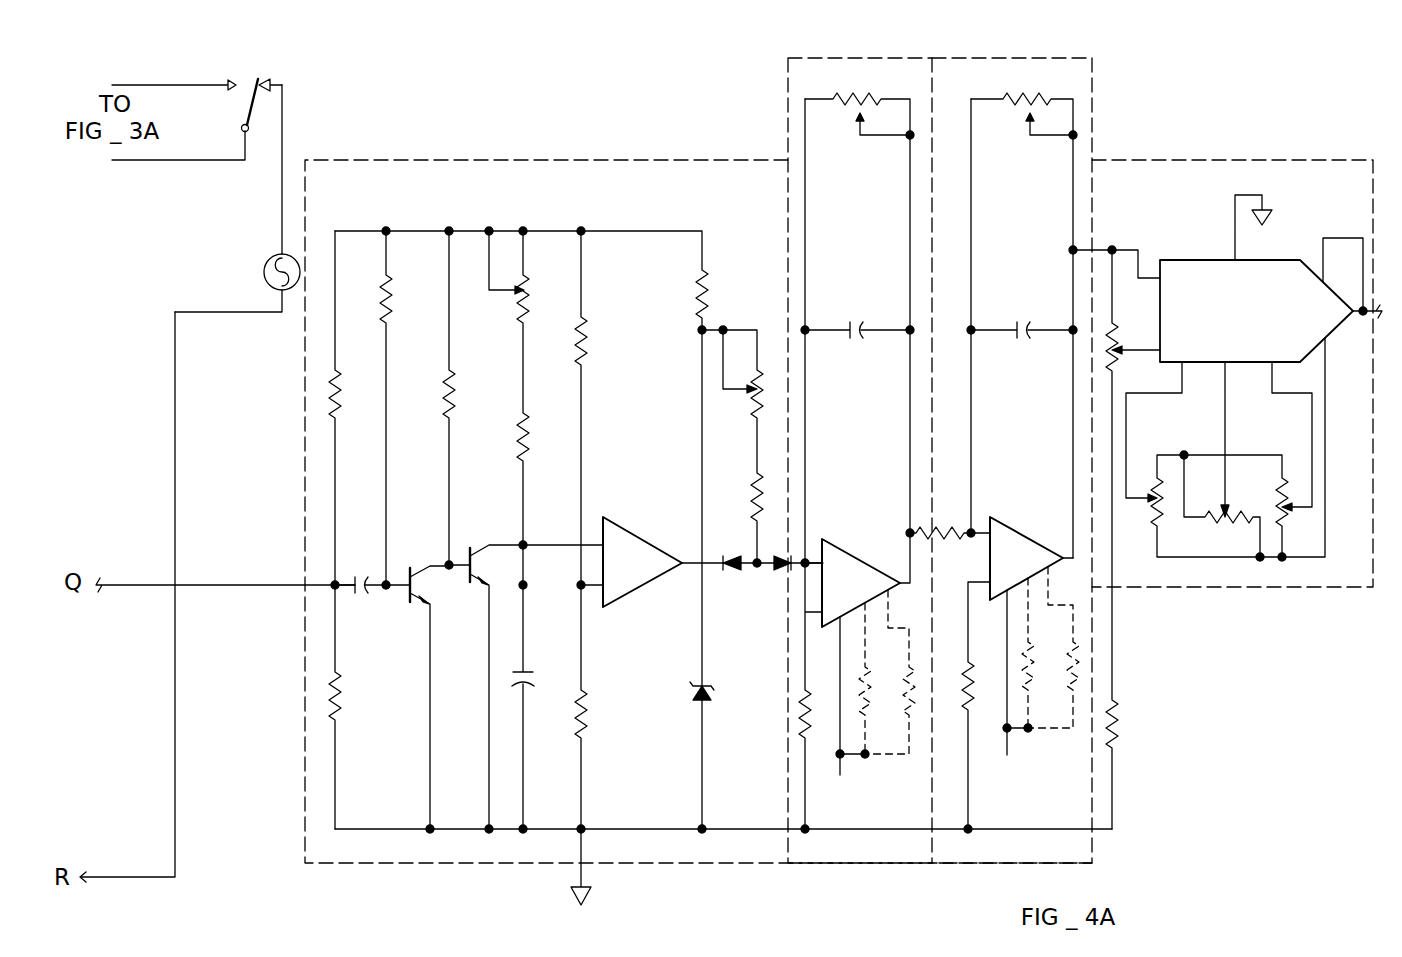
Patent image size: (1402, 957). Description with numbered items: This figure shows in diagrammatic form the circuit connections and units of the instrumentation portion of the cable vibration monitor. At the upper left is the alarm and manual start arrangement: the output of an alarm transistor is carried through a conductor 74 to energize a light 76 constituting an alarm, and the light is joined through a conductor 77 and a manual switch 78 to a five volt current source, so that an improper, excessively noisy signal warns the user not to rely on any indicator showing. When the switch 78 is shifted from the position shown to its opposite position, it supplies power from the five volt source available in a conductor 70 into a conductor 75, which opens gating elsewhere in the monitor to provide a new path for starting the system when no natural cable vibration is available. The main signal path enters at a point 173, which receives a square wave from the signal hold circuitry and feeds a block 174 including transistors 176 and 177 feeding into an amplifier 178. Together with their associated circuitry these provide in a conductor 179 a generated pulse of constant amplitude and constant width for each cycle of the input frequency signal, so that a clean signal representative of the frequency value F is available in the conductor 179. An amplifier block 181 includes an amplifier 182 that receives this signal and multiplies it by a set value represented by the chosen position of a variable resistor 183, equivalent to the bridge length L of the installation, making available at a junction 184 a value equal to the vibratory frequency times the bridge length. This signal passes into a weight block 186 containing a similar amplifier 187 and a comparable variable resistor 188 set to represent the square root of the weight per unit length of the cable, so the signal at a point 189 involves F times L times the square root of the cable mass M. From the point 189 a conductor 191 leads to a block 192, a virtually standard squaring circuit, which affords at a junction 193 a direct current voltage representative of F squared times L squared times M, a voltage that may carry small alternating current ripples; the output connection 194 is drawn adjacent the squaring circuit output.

The conductor 70 is at (150, 163).
The conductor 74 is at (175, 632).
The conductor 75 is at (154, 83).
The light 76 is at (265, 260).
The conductor 77 is at (284, 122).
The manual switch 78 is at (245, 112).
The point 173 is at (325, 583).
The block 174 is at (490, 160).
The transistor 176 is at (427, 563).
The transistor 177 is at (485, 543).
The amplifier 178 is at (647, 542).
The conductor 179 is at (792, 568).
The amplifier block 181 is at (788, 101).
The amplifier 182 is at (867, 557).
The variable resistor 183 is at (855, 313).
The junction 184 is at (910, 530).
The weight block 186 is at (1092, 101).
The amplifier 187 is at (1028, 533).
The variable resistor 188 is at (1020, 325).
The point 189 is at (1073, 250).
The conductor 191 is at (1094, 247).
The block 192 is at (1222, 160).
The junction 193 is at (1358, 318).
The feedback connection 194 is at (1366, 300).